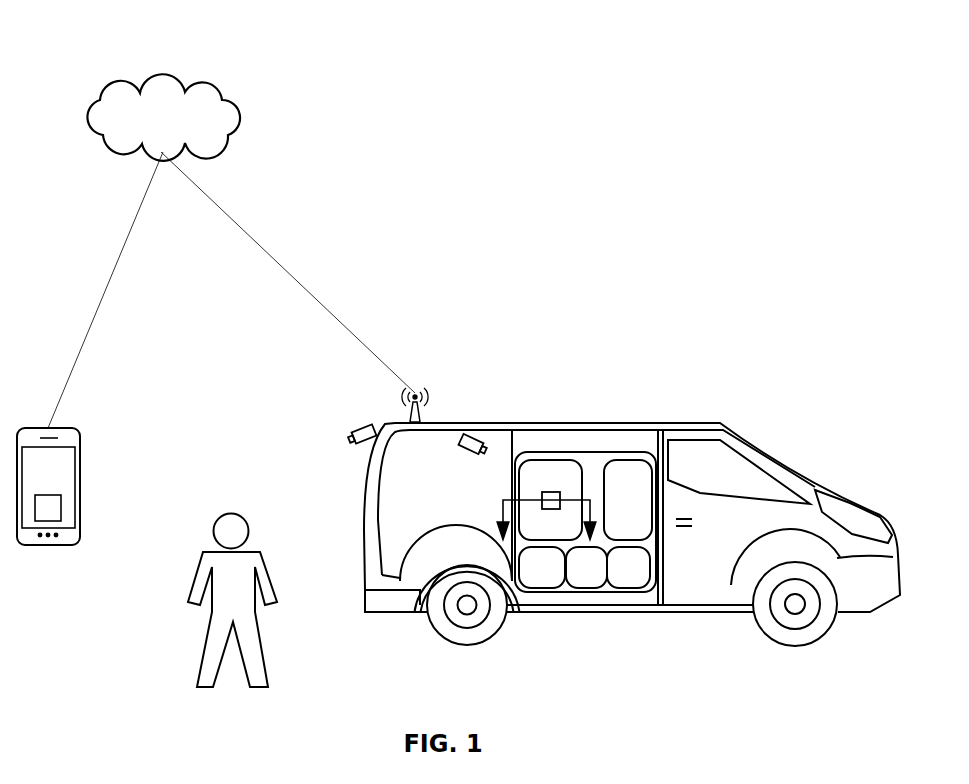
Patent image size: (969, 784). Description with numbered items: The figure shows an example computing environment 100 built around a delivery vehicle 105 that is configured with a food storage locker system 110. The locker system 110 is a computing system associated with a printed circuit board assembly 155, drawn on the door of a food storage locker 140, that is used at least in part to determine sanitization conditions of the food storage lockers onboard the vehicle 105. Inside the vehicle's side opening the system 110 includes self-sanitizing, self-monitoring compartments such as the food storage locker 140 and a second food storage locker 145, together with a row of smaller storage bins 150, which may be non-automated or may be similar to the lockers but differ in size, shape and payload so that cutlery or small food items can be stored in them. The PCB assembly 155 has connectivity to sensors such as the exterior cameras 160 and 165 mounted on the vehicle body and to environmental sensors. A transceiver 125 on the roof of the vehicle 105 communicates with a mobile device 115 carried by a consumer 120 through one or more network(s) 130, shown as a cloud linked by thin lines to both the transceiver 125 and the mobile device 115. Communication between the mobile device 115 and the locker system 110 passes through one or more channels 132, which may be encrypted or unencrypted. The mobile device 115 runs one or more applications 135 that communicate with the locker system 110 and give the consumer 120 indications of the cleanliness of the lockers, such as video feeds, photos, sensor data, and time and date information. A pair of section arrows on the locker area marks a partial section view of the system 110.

The computing environment 100 is at (914, 82).
The vehicle 105 is at (718, 428).
The food storage locker system 110 is at (591, 534).
The mobile device 115 is at (80, 471).
The consumer 120 is at (233, 513).
The transceiver 125 is at (425, 396).
The network(s) 130 is at (163, 117).
The channel(s) 132 is at (112, 272).
The application(s) 135 is at (57, 507).
The food storage locker 140 is at (550, 500).
The food storage locker 145 is at (628, 500).
The storage bins 150 is at (645, 588).
The printed circuit board (PCB) assembly 155 is at (553, 492).
The exterior camera 160 is at (475, 437).
The exterior camera 165 is at (367, 426).